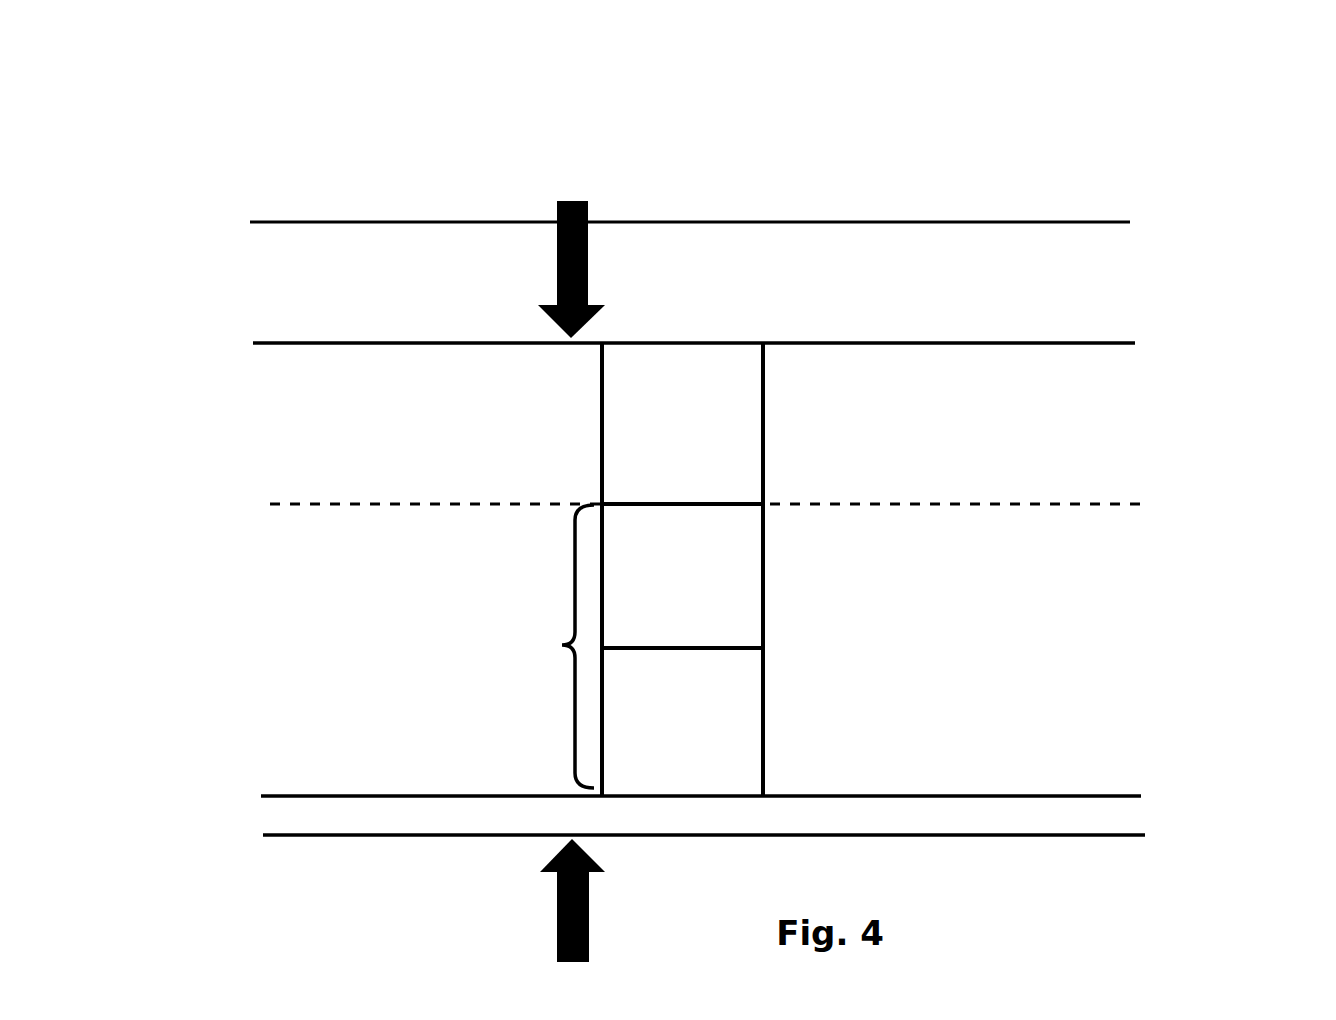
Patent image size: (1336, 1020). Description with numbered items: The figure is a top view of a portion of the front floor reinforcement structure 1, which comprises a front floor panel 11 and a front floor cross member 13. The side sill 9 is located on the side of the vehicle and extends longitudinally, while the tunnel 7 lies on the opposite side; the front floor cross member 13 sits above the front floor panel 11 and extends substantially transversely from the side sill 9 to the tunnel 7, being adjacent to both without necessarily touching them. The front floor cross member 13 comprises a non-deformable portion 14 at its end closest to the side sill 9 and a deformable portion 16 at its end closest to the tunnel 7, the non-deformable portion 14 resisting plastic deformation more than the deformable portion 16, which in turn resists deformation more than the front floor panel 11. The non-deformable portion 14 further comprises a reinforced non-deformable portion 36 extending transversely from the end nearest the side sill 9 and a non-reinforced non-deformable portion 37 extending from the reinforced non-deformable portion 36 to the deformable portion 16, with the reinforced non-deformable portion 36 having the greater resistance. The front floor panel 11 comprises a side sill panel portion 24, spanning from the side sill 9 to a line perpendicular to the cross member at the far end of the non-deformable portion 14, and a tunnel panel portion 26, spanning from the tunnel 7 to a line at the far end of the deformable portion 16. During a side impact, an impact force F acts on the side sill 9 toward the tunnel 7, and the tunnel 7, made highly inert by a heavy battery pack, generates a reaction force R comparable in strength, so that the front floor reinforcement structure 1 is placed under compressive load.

The front floor reinforcement structure 1 is at (437, 182).
The tunnel 7 is at (725, 256).
The reaction force R is at (576, 203).
The impact force F is at (590, 910).
The side sill 9 is at (1146, 812).
The tunnel panel portion 26 is at (335, 461).
The deformable portion 16 is at (647, 457).
The front floor cross member 13 is at (780, 548).
The non-reinforced non-deformable portion 37 is at (717, 567).
The reinforced non-deformable portion 36 is at (732, 688).
The non-deformable portion 14 is at (543, 645).
The front floor panel 11 is at (330, 641).
The side sill panel portion 24 is at (350, 745).